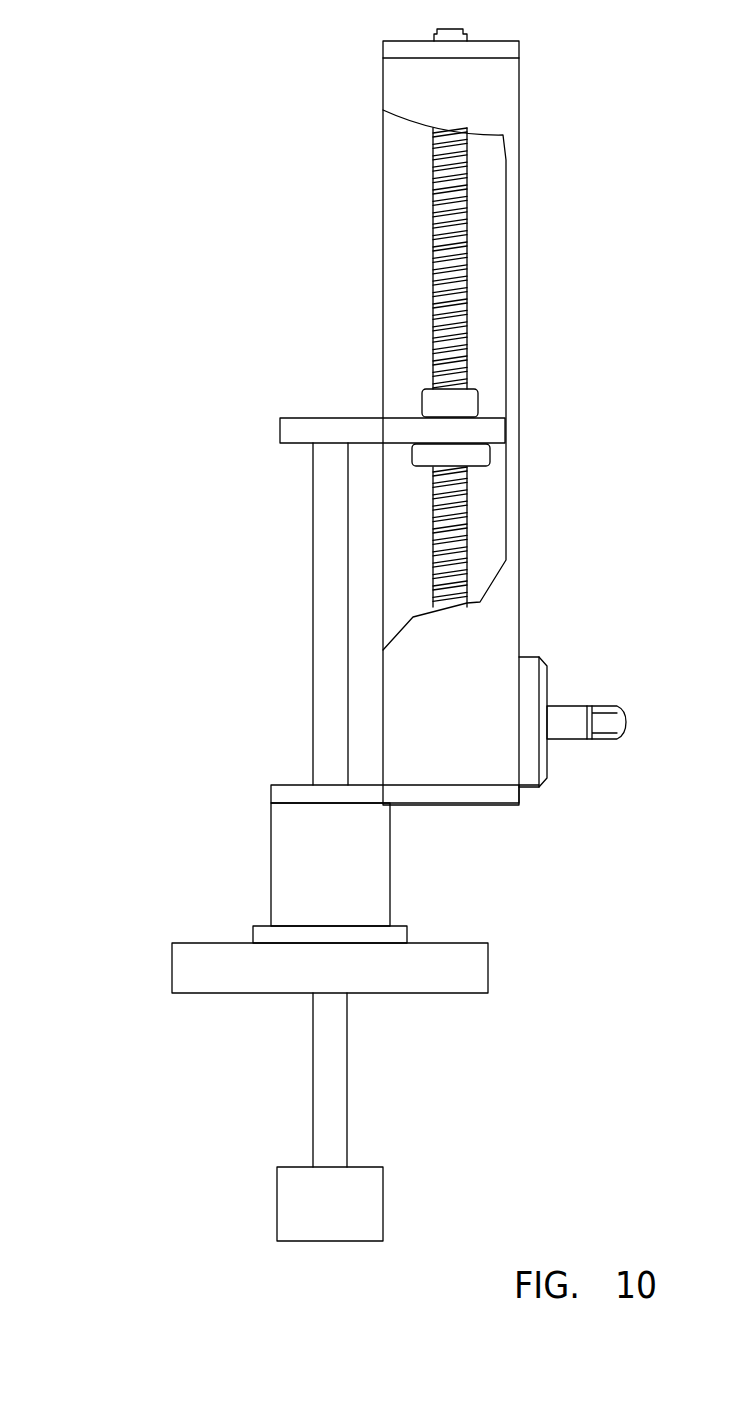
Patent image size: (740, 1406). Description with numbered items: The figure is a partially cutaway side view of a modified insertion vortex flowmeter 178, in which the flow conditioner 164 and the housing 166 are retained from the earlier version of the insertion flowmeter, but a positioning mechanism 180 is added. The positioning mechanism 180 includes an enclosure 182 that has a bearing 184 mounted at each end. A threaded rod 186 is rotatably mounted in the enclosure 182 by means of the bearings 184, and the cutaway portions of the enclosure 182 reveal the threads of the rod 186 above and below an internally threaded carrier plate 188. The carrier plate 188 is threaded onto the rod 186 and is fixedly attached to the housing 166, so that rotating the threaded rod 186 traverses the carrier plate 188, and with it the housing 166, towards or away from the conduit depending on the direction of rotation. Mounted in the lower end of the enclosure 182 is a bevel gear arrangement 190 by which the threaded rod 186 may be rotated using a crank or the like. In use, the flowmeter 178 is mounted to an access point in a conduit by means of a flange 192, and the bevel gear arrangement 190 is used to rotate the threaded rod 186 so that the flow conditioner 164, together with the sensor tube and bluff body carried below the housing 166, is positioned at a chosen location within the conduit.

The flow conditioner 164 is at (363, 1167).
The housing 166 is at (313, 623).
The insertion vortex flowmeter 178 is at (187, 855).
The positioning mechanism 180 is at (560, 268).
The enclosure 182 is at (519, 455).
The bearing 184 is at (470, 40).
The threaded rod 186 is at (467, 523).
The carrier plate 188 is at (330, 418).
The bevel gear arrangement 190 is at (529, 693).
The flange 192 is at (463, 942).